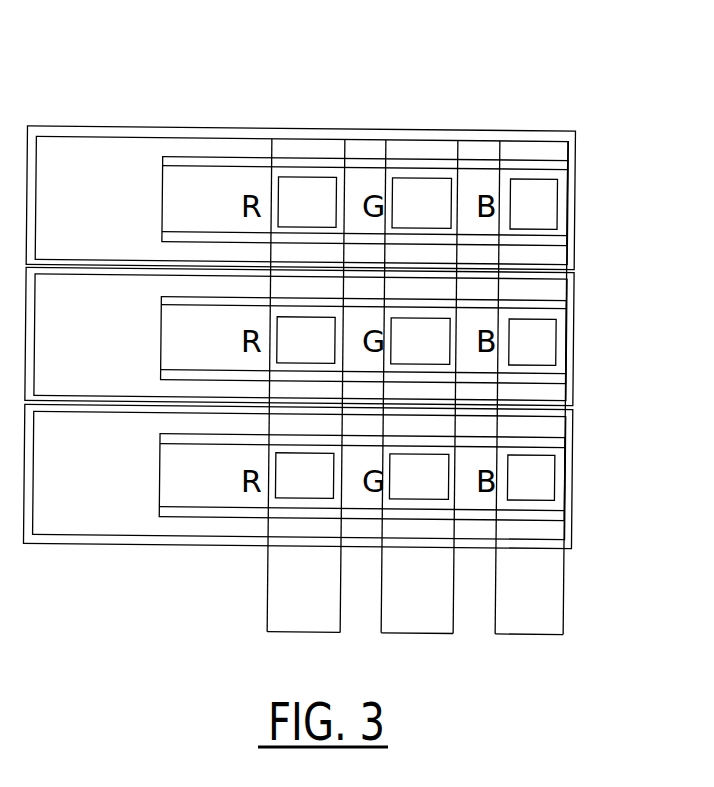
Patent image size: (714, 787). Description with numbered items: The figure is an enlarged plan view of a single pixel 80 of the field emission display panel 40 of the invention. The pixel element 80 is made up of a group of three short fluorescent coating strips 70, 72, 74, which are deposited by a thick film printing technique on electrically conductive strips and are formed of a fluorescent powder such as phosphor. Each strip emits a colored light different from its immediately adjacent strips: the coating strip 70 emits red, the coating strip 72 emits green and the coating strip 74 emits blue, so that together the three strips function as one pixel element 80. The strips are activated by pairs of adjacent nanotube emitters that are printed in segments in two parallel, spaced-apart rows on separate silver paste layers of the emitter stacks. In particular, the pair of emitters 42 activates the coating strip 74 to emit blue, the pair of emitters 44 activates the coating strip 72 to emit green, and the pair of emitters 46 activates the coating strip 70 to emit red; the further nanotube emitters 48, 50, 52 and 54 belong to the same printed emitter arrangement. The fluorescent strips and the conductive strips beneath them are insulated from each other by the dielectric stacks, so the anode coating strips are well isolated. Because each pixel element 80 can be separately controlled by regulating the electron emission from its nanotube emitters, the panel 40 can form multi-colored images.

The field emission display panel 40 is at (516, 60).
The pair of nanotube emitters 42 is at (537, 390).
The pair of nanotube emitters 44 is at (395, 284).
The pair of nanotube emitters 46 is at (288, 292).
The nanotube emitter 48 is at (545, 254).
The nanotube emitter 50 is at (408, 430).
The nanotube emitter 52 is at (290, 428).
The nanotube emitter 54 is at (535, 427).
The fluorescent coating strip 70 is at (312, 190).
The fluorescent coating strip 72 is at (418, 189).
The fluorescent coating strip 74 is at (535, 191).
The pixel element 80 is at (590, 199).